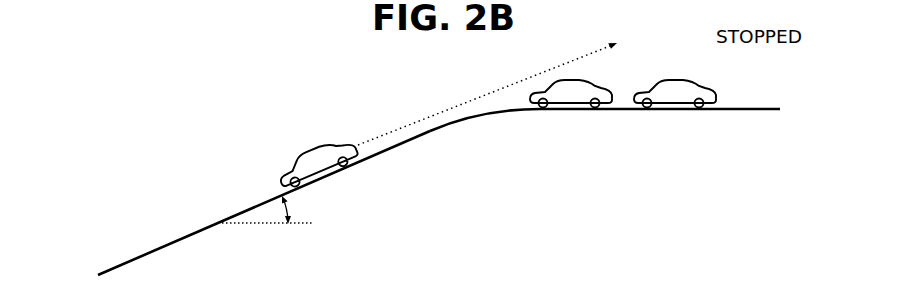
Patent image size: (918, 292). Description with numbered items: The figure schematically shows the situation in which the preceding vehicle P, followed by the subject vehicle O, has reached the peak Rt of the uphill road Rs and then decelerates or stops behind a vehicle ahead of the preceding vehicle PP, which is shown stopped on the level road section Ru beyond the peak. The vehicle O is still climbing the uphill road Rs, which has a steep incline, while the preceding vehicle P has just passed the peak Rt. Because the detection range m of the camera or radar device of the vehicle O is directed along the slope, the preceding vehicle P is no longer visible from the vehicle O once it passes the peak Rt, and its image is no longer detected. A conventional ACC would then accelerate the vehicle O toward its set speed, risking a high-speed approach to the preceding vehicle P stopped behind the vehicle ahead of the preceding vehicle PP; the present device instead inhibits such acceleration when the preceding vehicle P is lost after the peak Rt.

The vehicle O is at (300, 155).
The preceding vehicle P is at (585, 77).
The vehicle ahead of the preceding vehicle PP is at (699, 88).
The detection range m is at (427, 118).
The uphill road Rs is at (192, 238).
The peak of the uphill road Rt is at (510, 120).
The flat road section Ru is at (683, 114).